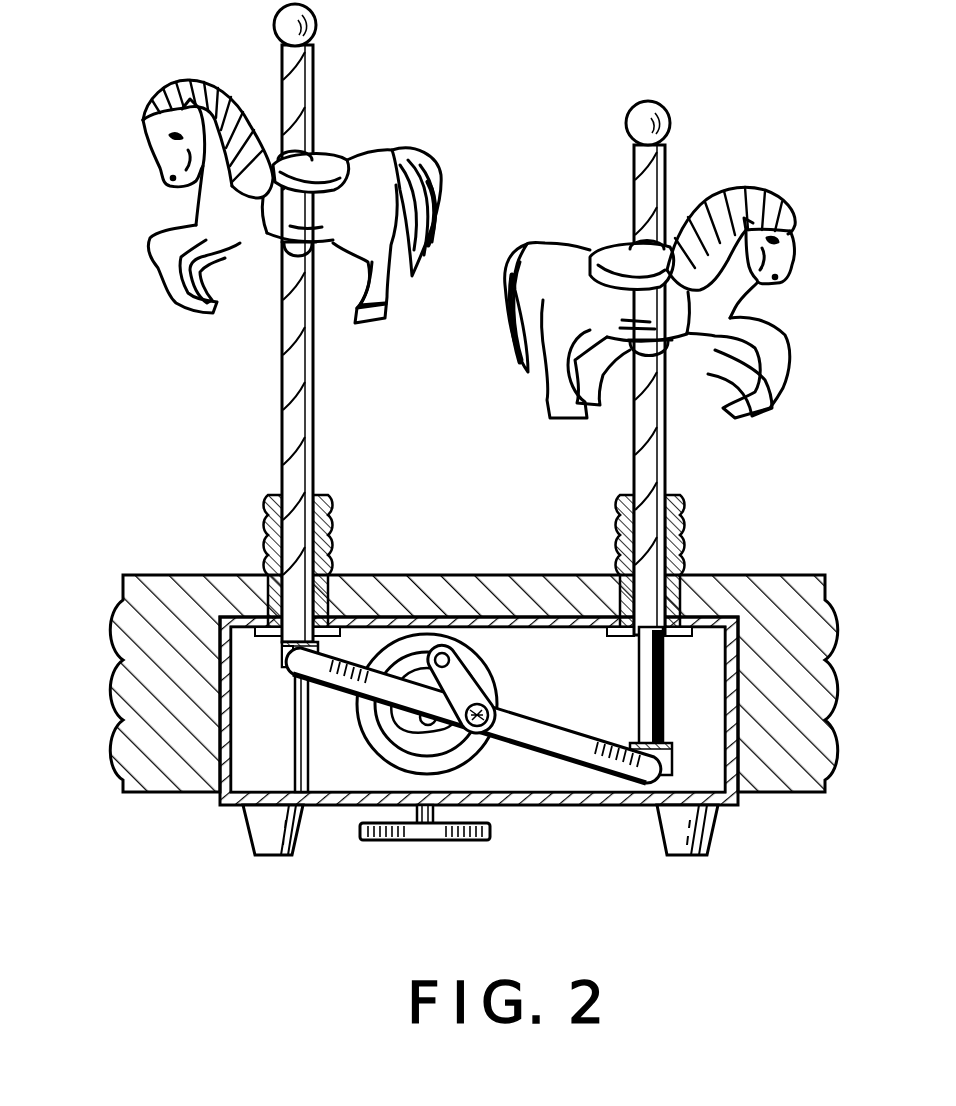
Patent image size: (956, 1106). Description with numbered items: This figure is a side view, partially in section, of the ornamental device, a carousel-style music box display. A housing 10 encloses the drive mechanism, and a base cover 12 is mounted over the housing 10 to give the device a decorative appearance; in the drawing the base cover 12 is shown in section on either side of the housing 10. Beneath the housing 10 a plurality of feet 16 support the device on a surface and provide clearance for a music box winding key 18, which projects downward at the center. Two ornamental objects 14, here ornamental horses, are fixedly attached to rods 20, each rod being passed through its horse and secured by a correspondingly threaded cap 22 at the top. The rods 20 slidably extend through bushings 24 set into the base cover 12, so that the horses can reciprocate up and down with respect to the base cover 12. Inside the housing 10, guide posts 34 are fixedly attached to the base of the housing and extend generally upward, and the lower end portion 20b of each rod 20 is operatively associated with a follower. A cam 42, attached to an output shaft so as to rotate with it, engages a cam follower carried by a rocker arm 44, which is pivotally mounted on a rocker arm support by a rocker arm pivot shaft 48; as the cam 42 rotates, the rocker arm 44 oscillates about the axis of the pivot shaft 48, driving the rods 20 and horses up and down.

The housing 10 is at (218, 757).
The base cover 12 is at (133, 670).
The ornamental objects 14 is at (160, 158).
The feet 16 is at (297, 840).
The music box winding key 18 is at (433, 833).
The rods 20 is at (297, 422).
The end portion of rod 20b is at (668, 718).
The threaded cap 22 is at (295, 85).
The bushings 24 is at (263, 533).
The guide posts 34 is at (295, 727).
The cam 42 is at (465, 660).
The rocker arm 44 is at (577, 740).
The rocker arm pivot shaft 48 is at (500, 710).